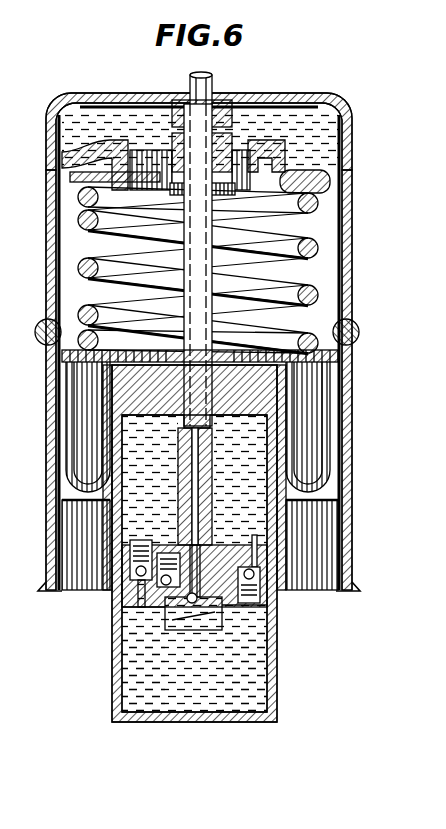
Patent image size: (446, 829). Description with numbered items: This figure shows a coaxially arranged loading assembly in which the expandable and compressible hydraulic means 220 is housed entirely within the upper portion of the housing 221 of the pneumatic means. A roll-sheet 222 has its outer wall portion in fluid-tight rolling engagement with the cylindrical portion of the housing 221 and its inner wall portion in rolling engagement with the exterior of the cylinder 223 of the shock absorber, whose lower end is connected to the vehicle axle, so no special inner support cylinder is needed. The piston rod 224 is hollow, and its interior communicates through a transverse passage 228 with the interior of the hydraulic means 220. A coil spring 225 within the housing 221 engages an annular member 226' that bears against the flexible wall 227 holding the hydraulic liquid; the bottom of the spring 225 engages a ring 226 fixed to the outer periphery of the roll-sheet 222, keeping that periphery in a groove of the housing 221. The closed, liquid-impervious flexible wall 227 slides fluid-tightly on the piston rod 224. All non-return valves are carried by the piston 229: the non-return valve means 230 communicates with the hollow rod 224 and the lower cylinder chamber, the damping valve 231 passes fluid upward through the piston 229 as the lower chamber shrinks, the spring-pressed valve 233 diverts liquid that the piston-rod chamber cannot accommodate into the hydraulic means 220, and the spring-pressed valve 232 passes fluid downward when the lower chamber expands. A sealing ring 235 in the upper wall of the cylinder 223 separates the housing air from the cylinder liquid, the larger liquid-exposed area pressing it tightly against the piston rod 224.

The expandable and compressible hydraulic means 220 is at (352, 128).
The housing 221 is at (50, 216).
The roll-sheet 222 is at (305, 497).
The cylinder 223 is at (277, 632).
The piston rod 224 is at (212, 284).
The coil spring 225 is at (318, 252).
The ring 226 is at (215, 454).
The annular member 226' is at (328, 168).
The flexible wall 227 is at (58, 154).
The transverse passage 228 is at (248, 96).
The piston 229 is at (128, 607).
The non-return valve means 230 is at (190, 632).
The non-return damping valve 231 is at (130, 580).
The spring-pressed non-return valve 232 is at (275, 580).
The spring-pressed non-return valve 233 is at (194, 598).
The sealing ring 235 is at (236, 426).